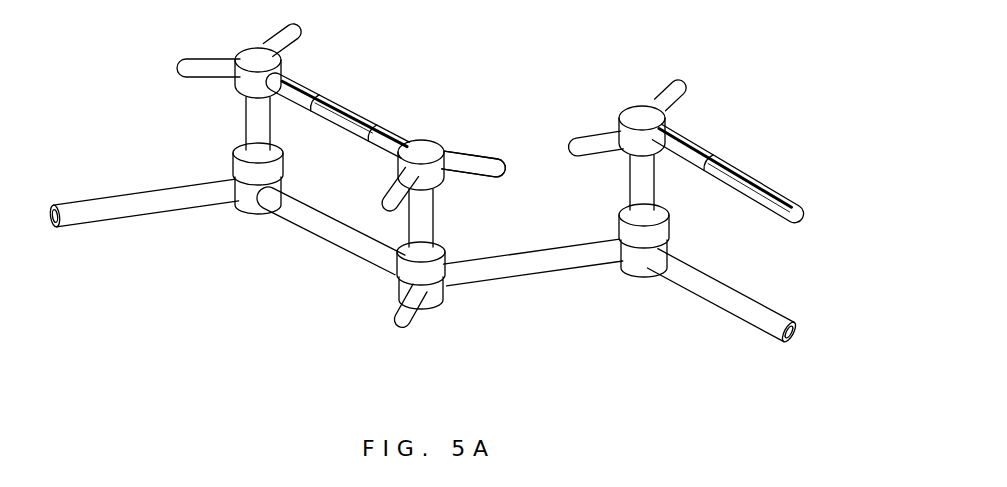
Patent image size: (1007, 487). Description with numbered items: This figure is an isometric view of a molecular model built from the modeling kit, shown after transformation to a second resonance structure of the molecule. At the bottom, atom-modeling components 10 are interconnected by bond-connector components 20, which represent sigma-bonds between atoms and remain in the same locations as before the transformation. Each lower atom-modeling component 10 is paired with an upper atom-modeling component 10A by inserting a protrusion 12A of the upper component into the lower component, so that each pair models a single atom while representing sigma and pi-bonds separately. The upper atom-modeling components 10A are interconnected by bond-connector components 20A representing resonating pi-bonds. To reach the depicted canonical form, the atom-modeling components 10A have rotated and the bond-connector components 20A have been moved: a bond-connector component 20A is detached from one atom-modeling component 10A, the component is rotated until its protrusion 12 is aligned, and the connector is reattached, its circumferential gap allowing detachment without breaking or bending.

The atom-modeling component 10 is at (253, 212).
The atom-modeling component 10A is at (250, 50).
The protrusion 12 is at (477, 185).
The protrusion 12A is at (287, 136).
The bond-connector component 20 is at (90, 228).
The bond-connector component 20A is at (343, 105).